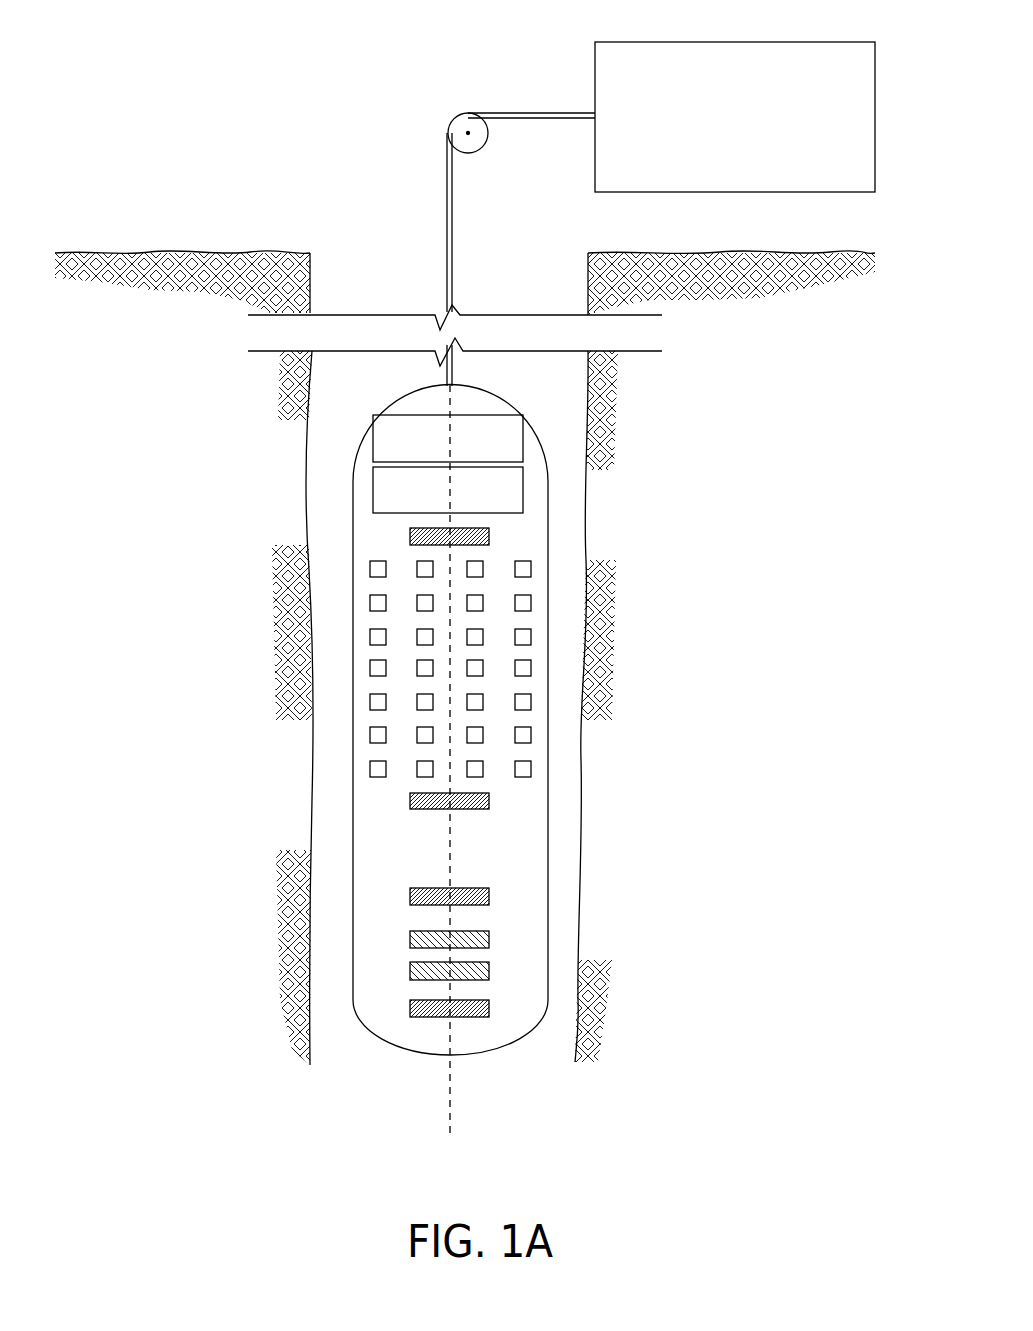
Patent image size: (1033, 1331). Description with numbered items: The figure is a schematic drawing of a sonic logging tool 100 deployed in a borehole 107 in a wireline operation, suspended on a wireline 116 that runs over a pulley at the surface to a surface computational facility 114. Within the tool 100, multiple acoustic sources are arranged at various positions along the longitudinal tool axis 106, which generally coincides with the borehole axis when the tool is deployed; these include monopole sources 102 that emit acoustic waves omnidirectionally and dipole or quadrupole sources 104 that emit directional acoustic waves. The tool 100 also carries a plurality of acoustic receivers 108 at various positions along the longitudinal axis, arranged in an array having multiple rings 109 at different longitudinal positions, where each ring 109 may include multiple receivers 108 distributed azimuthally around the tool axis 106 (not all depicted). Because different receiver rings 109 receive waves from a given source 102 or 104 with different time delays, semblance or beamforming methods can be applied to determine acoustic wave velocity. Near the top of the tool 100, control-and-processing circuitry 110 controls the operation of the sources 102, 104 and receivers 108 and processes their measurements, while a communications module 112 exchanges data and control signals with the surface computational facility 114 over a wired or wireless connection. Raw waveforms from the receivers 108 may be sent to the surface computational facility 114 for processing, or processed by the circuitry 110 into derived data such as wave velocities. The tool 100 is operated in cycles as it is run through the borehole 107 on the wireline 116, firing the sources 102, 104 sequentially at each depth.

The sonic logging tool 100 is at (522, 399).
The monopole sources 102 is at (489, 536).
The dipole or quadrupole sources 104 is at (489, 939).
The longitudinal tool axis 106 is at (451, 1105).
The borehole 107 is at (375, 238).
The acoustic receivers 108 is at (418, 564).
The rings 109 is at (535, 573).
The control-and-processing circuitry 110 is at (523, 437).
The communications module 112 is at (523, 487).
The surface computational facility 114 is at (728, 42).
The wireline 116 is at (453, 190).